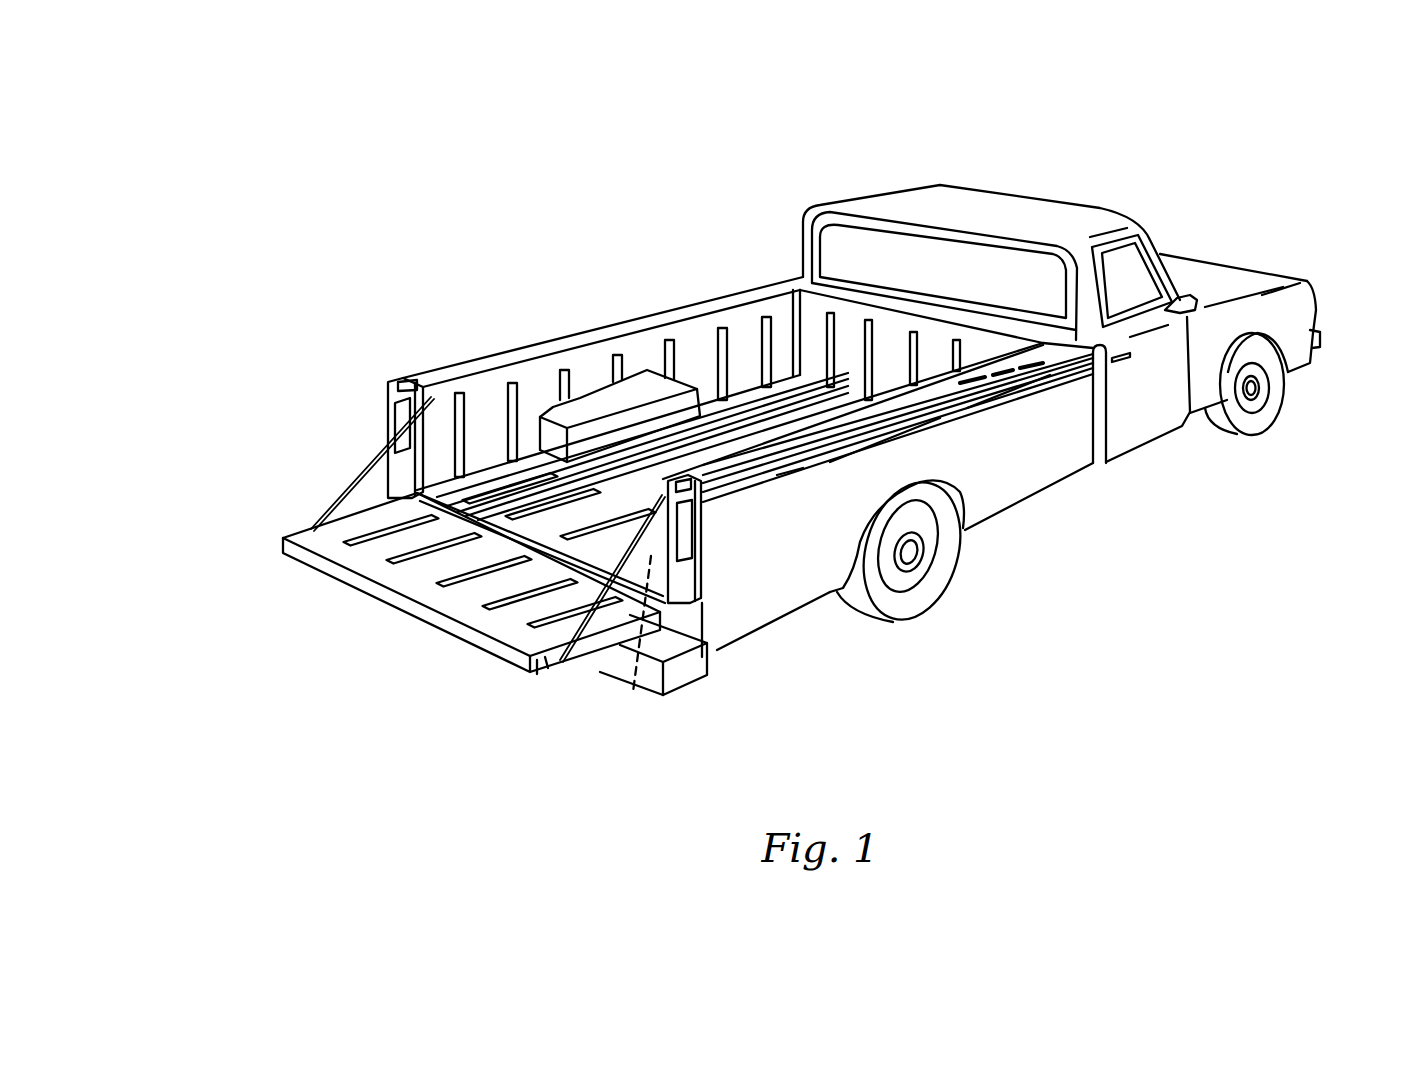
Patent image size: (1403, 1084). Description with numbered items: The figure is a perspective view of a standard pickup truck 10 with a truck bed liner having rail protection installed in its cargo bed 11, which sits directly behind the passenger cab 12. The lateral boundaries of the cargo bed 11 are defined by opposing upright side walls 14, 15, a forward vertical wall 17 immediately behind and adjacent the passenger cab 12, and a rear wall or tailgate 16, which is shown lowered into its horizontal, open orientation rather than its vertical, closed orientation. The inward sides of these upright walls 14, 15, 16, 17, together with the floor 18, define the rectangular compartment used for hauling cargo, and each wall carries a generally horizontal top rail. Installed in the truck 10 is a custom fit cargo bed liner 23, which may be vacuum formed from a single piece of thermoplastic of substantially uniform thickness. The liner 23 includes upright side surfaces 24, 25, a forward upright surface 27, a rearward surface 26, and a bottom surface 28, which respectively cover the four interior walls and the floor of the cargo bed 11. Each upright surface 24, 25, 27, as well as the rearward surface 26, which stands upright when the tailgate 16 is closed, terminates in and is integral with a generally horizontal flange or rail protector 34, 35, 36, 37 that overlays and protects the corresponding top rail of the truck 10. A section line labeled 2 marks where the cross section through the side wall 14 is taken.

The pickup truck 10 is at (958, 118).
The cargo bed 11 is at (460, 292).
The passenger cab 12 is at (926, 158).
The side wall 14 is at (570, 333).
The side wall 15 is at (823, 503).
The tailgate 16 is at (567, 672).
The forward vertical wall 17 is at (1028, 333).
The floor 18 is at (633, 692).
The cargo bed liner 23 is at (800, 313).
The upright side surface 24 is at (470, 413).
The upright side surface 25 is at (747, 443).
The rearward surface 26 is at (443, 570).
The forward upright surface 27 is at (852, 318).
The bottom surface 28 is at (603, 540).
The rail protector 34 is at (702, 305).
The rail protector 35 is at (1047, 378).
The rail protector 36 is at (330, 561).
The rail protector 37 is at (943, 322).
The section line 2- 2 is at (738, 312).